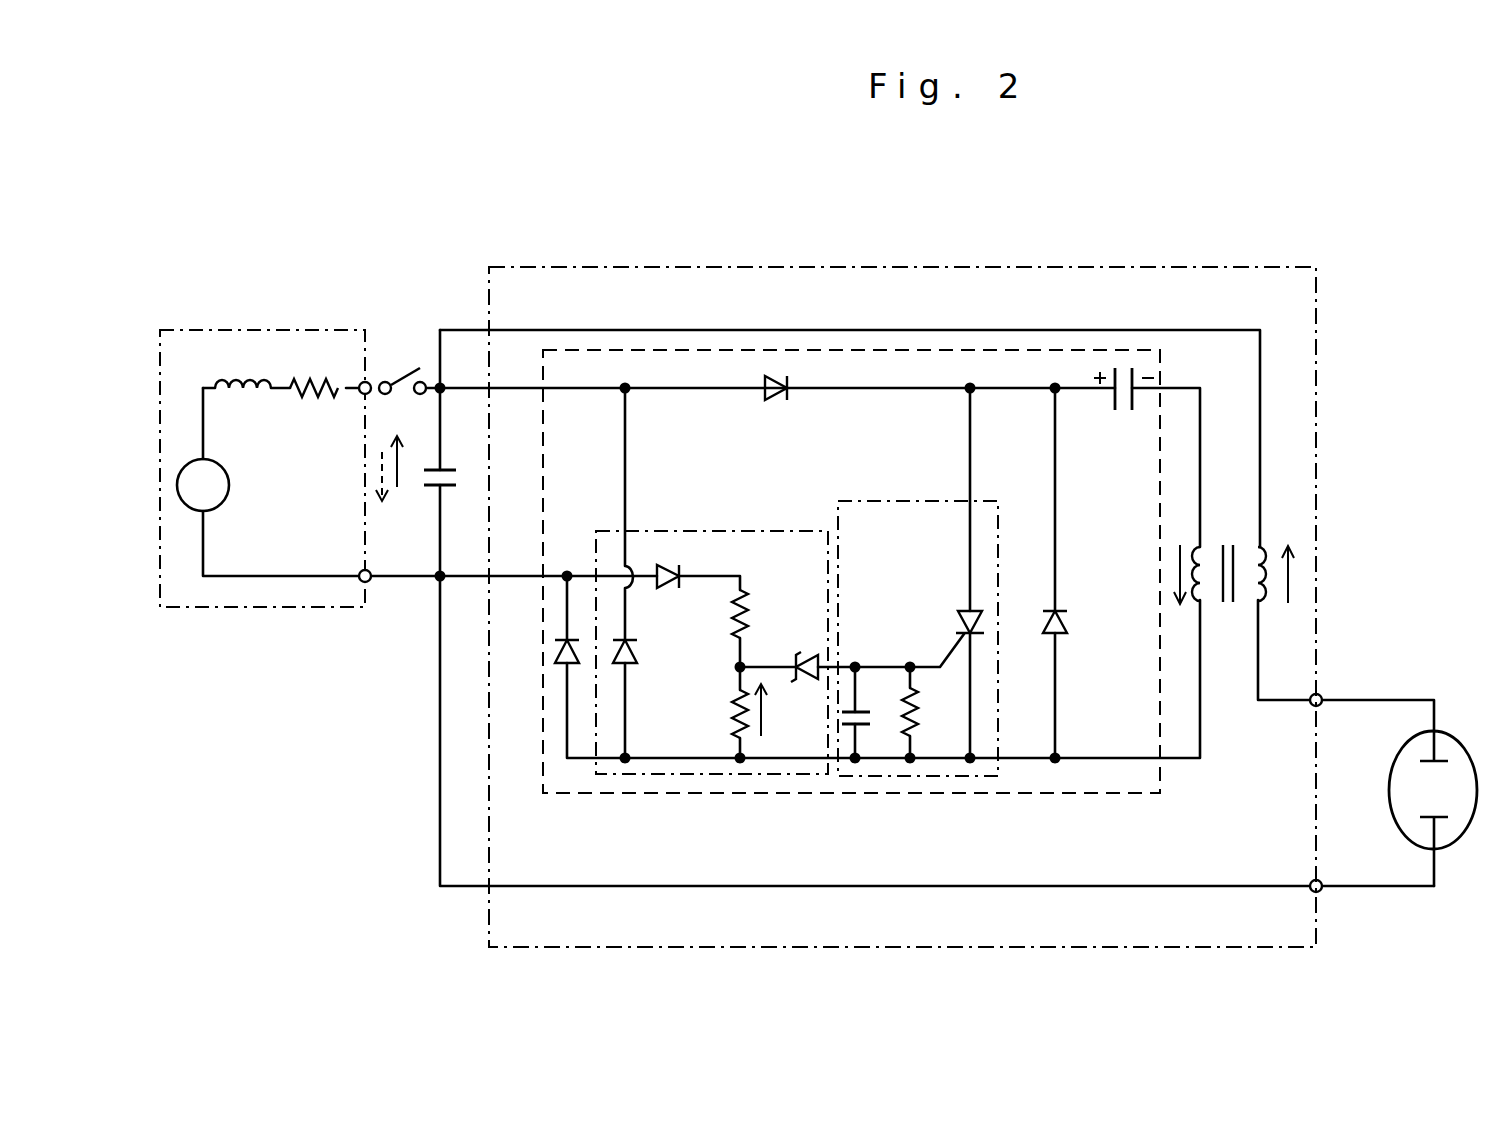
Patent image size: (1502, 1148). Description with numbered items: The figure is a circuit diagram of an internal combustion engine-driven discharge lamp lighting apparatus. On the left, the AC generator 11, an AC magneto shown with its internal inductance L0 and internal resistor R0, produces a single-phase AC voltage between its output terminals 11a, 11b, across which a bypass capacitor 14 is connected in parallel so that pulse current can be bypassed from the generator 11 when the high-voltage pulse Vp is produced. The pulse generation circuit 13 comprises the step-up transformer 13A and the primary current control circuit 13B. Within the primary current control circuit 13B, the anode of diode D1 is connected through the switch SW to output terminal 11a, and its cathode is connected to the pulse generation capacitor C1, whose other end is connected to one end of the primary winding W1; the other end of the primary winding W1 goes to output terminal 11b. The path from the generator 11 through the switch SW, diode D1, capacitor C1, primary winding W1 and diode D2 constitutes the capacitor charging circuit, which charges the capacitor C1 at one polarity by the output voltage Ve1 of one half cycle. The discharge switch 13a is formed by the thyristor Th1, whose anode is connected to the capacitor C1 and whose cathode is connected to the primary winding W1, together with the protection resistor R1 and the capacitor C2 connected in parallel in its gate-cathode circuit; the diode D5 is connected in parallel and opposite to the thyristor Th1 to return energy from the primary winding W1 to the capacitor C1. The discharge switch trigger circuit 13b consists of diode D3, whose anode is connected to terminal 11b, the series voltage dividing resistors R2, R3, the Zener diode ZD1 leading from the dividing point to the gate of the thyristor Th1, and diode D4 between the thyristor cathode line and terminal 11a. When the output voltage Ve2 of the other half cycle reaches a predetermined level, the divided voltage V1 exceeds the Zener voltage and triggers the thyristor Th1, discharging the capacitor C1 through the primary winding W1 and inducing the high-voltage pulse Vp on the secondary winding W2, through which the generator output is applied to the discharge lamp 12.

The AC generator 11 is at (229, 319).
The output terminal 11a is at (360, 383).
The output terminal 11b is at (360, 582).
The high-voltage discharge lamp 12 is at (1457, 740).
The pulse generation circuit 13 is at (849, 262).
The step-up transformer 13A is at (1238, 531).
The primary current control circuit 13B is at (1059, 340).
The discharge switch 13a is at (875, 490).
The discharge switch trigger circuit 13b is at (703, 470).
The bypass capacitor 14 is at (466, 470).
The switch SW is at (410, 377).
The internal inductance L0 is at (243, 394).
The internal resistor R0 is at (321, 394).
The diode D1 is at (785, 402).
The diode D2 is at (557, 652).
The diode D3 is at (667, 584).
The diode D4 is at (634, 647).
The diode D5 is at (1068, 626).
The Zener diode ZD1 is at (815, 660).
The resistor R1 is at (912, 710).
The resistor R2 is at (735, 610).
The resistor R3 is at (735, 706).
The pulse generation capacitor C1 is at (1122, 418).
The capacitor C2 is at (872, 718).
The thyristor Th1 is at (957, 620).
The primary winding W1 is at (1195, 560).
The secondary winding W2 is at (1262, 560).
The output voltage of one half cycle Ve1 is at (413, 444).
The output voltage of the other half cycle Ve2 is at (398, 500).
The output voltage of the voltage dividing circuit V1 is at (785, 711).
The high-voltage pulse Vp is at (1297, 592).